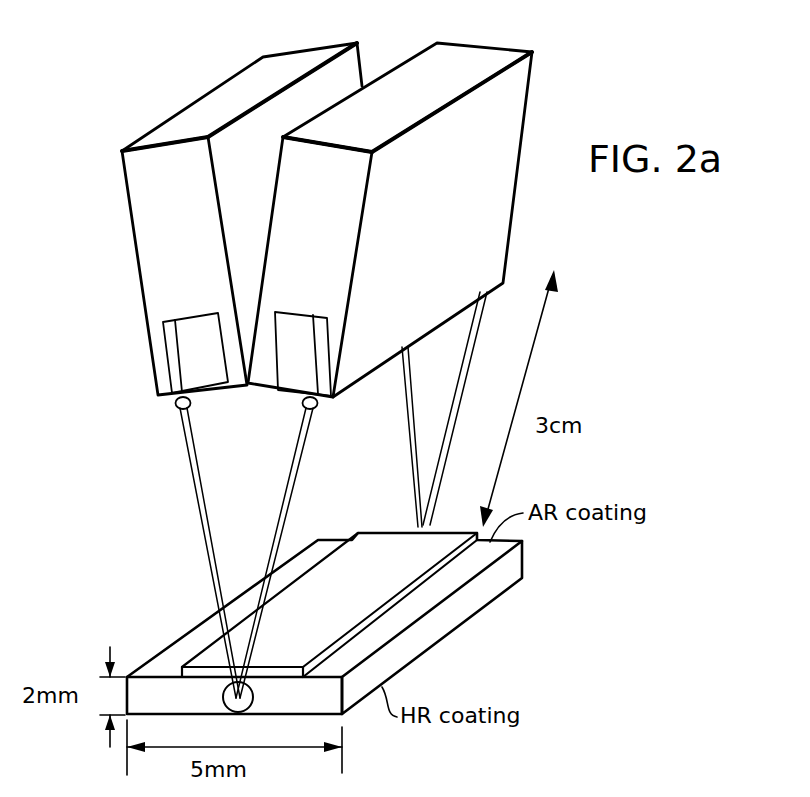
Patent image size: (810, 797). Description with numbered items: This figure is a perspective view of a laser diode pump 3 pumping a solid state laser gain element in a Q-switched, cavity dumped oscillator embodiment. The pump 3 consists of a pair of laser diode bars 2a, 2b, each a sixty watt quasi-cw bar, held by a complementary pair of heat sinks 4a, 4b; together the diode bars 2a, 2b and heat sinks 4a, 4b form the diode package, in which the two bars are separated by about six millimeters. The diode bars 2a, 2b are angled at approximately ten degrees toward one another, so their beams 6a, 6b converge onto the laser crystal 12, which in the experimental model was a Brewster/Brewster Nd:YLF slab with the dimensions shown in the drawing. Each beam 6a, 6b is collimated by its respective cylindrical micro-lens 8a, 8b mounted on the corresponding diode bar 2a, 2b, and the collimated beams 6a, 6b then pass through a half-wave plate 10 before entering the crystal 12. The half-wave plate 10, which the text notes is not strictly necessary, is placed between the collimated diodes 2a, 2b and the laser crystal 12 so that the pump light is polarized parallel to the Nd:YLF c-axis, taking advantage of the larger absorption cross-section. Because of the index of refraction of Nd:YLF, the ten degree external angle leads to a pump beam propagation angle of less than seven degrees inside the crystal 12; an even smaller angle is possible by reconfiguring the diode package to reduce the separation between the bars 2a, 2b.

The laser diode pump 3 is at (550, 71).
The heat sink 4a is at (297, 60).
The heat sink 4b is at (477, 58).
The laser diode bar 2a is at (172, 338).
The laser diode bar 2b is at (318, 332).
The micro-lens 8a is at (175, 402).
The micro-lens 8b is at (315, 412).
The beam 6a is at (198, 500).
The beam 6b is at (457, 420).
The half-wave plate 10 is at (200, 660).
The laser crystal 12 is at (443, 613).